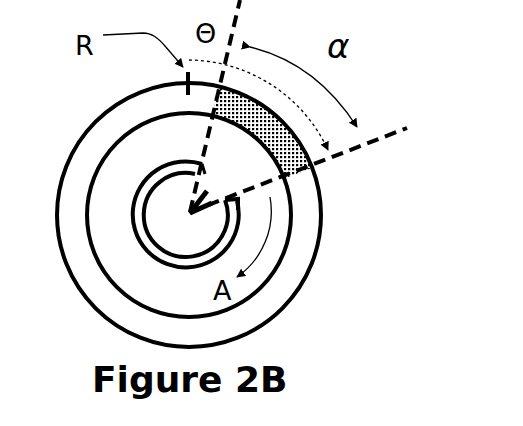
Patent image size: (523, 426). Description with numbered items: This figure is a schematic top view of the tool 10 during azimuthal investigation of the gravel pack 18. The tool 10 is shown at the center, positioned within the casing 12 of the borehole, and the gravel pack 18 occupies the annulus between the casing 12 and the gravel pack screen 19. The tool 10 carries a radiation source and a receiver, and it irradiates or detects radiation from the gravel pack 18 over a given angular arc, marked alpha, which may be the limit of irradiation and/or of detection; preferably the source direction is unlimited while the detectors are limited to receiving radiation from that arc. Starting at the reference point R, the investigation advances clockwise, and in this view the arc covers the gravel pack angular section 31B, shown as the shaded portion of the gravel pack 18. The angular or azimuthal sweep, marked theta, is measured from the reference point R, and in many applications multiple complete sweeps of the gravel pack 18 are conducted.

The tool 10 is at (143, 257).
The casing 12 is at (134, 93).
The gravel pack 18 is at (122, 122).
The gravel pack screen 19 is at (107, 147).
The gravel pack angular section 31B is at (303, 184).